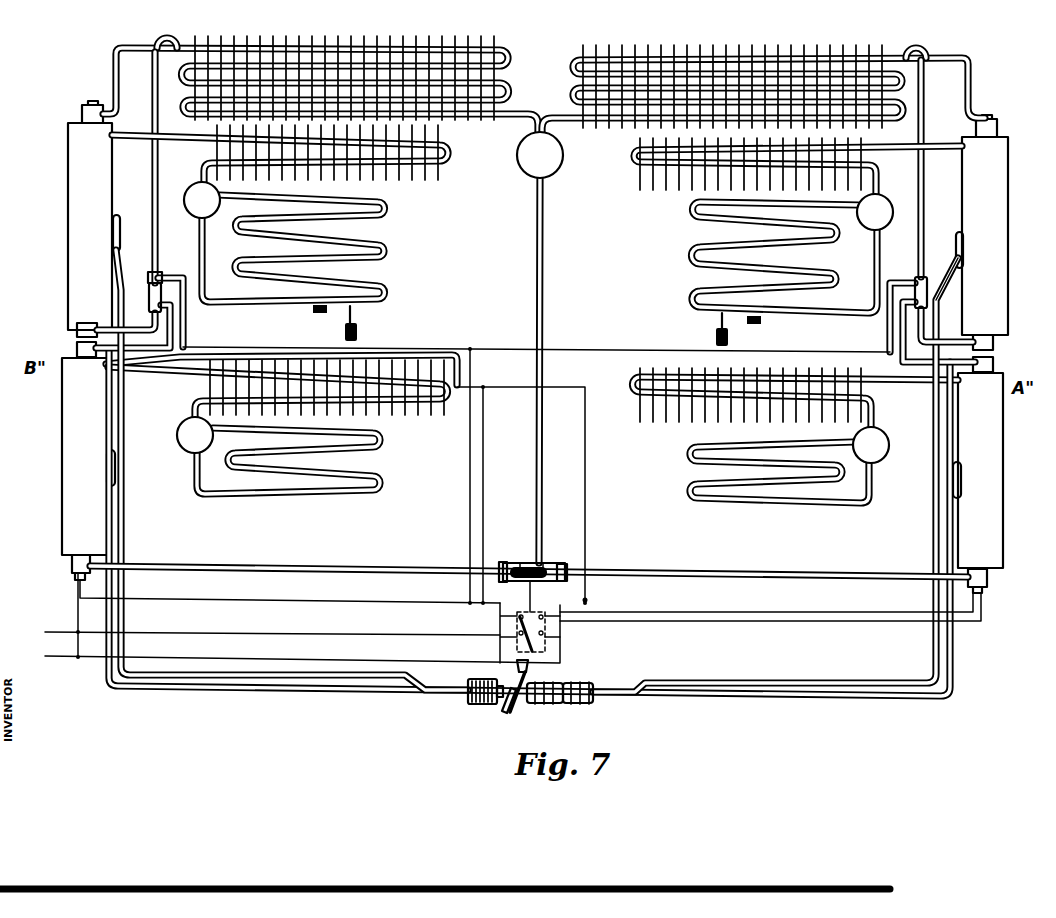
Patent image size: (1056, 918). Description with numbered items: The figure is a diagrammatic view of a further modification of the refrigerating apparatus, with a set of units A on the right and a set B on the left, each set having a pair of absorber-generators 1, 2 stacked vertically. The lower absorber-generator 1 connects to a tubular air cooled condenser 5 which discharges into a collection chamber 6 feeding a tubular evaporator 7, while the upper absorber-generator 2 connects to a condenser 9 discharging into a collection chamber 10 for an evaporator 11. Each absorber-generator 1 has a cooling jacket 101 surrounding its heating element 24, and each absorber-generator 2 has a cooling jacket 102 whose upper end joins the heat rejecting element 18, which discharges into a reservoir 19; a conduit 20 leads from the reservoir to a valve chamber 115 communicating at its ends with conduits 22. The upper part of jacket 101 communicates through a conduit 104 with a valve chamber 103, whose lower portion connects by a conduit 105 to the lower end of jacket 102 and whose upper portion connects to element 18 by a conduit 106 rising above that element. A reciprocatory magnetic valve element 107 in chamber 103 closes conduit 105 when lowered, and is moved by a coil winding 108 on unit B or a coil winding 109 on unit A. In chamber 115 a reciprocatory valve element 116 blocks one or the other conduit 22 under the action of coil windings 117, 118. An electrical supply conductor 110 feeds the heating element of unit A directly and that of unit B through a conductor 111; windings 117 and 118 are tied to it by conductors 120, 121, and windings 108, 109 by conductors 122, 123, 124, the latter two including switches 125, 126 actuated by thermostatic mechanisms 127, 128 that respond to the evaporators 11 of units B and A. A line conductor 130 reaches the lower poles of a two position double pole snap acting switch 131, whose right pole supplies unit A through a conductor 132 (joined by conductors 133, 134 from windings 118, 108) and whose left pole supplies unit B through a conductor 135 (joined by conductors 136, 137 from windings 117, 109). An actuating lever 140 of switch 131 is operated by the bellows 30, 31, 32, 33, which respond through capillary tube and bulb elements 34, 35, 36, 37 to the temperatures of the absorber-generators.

The absorber-generator 1 is at (532, 463).
The absorber-generator 2 is at (538, 218).
The tubular air cooled condenser 5 is at (200, 372).
The collection chamber 6 is at (533, 440).
The tubular evaporator 7 is at (235, 466).
The tubular air-cooled condenser 9 is at (423, 180).
The collection chamber 10 is at (538, 206).
The tubular evaporator 11 is at (240, 236).
The tubular air-cooled cooling element 18 is at (187, 90).
The reservoir 19 is at (540, 155).
The conduit 20 is at (545, 300).
The conduit 22 is at (360, 566).
The heating element 24 is at (75, 580).
The bellows 30 is at (475, 705).
The bellows 31 is at (504, 712).
The bellows 32 is at (532, 704).
The bellows 33 is at (582, 703).
The capillary tube and bulb element 34 is at (108, 470).
The capillary tube and bulb element 35 is at (112, 235).
The capillary tube and bulb element 36 is at (960, 478).
The capillary tube and bulb element 37 is at (963, 245).
The cooling jacket 101 is at (72, 565).
The cooling jacket 102 is at (77, 330).
The valve chamber 103 is at (158, 254).
The conduit 104 is at (166, 347).
The conduit 105 is at (118, 316).
The conduit 106 is at (151, 195).
The reciprocatory magnetic valve element 107 is at (154, 276).
The coil winding 108 is at (148, 272).
The coil winding 109 is at (945, 285).
The electrical supply conductor 110 is at (255, 659).
The conductor 111 is at (78, 612).
The valve chamber 115 is at (541, 562).
The reciprocatory valve element 116 is at (522, 562).
The coil winding 117 is at (505, 562).
The coil winding 118 is at (559, 564).
The conductor 120 is at (500, 618).
The conductor 121 is at (586, 600).
The conductor 122 is at (468, 497).
The conductor 123 is at (415, 348).
The conductor 124 is at (630, 350).
The switch 125 is at (358, 340).
The switch 126 is at (716, 340).
The thermostatic mechanism 127 is at (318, 314).
The thermostatic mechanism 128 is at (755, 320).
The line conductor 130 is at (310, 633).
The two position double pole snap acting electrical switch 131 is at (546, 630).
The conductor 132 is at (680, 612).
The conductor 133 is at (534, 578).
The conductor 134 is at (587, 490).
The conductor 135 is at (335, 601).
The conductor 136 is at (520, 603).
The conductor 137 is at (484, 512).
The actuating lever 140 is at (528, 666).